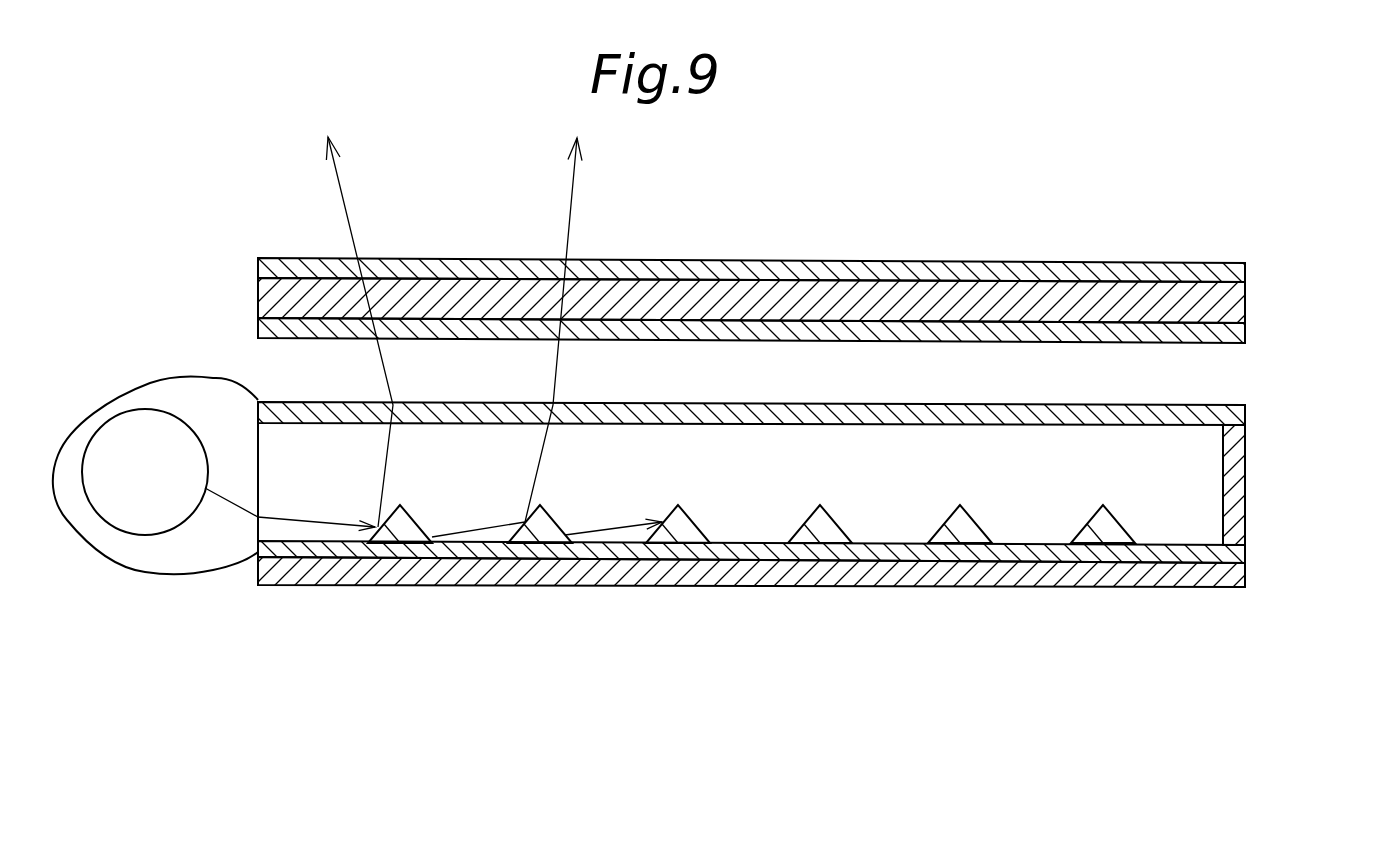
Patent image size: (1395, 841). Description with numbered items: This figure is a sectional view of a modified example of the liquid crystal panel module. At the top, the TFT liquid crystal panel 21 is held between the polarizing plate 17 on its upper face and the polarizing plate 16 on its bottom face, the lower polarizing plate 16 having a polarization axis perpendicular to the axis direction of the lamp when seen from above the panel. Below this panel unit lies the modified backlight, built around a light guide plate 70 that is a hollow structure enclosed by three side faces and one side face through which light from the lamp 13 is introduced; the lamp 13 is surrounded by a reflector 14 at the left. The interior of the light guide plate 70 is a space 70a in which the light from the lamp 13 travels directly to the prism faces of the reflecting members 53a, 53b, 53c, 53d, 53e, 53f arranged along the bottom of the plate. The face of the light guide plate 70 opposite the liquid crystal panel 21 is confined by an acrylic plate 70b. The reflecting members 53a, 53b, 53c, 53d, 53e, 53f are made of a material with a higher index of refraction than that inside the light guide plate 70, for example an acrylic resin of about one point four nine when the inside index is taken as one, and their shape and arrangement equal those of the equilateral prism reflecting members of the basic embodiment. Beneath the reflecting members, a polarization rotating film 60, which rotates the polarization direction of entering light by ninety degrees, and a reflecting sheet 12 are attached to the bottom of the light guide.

The reflecting sheet 12 is at (1245, 578).
The lamp 13 is at (177, 527).
The reflector 14 is at (147, 575).
The polarizing plate 16 is at (1245, 333).
The polarizing plate 17 is at (1245, 263).
The TFT liquid crystal panel 21 is at (1245, 305).
The reflecting member 53a is at (415, 540).
The reflecting member 53b is at (535, 540).
The reflecting member 53c is at (682, 535).
The reflecting member 53d is at (826, 530).
The reflecting member 53e is at (967, 533).
The reflecting member 53f is at (1108, 538).
The polarization rotating film 60 is at (1245, 555).
The light guide plate 70 is at (1245, 495).
The space 70a is at (1232, 470).
The acrylic plate 70b is at (457, 410).